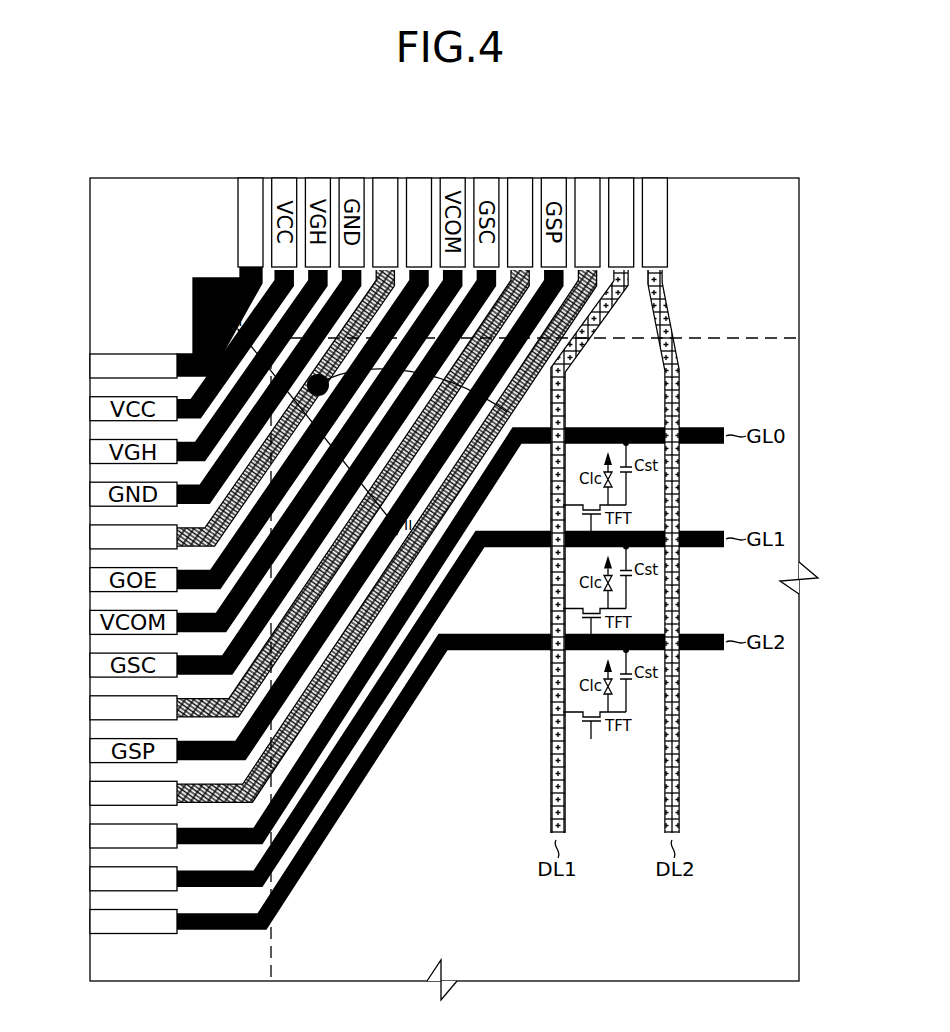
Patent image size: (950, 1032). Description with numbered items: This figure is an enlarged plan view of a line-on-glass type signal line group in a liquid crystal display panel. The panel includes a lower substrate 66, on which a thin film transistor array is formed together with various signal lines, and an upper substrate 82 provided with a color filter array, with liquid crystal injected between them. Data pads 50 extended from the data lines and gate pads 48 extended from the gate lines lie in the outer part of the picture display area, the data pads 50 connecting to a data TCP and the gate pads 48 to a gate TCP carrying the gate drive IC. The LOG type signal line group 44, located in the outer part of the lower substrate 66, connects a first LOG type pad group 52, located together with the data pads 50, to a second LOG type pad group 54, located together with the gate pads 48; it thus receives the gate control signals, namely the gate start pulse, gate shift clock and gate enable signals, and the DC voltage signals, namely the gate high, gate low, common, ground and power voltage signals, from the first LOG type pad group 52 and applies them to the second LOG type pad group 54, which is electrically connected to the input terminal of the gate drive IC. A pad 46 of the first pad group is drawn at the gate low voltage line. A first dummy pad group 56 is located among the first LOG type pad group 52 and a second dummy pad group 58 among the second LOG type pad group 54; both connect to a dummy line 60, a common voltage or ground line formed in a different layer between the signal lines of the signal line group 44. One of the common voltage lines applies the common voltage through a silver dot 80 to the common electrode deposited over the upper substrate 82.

The LOG type signal line group 44 is at (203, 262).
The input pad 46 is at (252, 178).
The gate pads 48 is at (78, 898).
The data pads 50 is at (643, 164).
The first LOG type pad group 52 is at (428, 164).
The second LOG type pad group 54 is at (117, 338).
The first dummy pad group 56 is at (386, 178).
The second dummy pad group 58 is at (90, 538).
The dummy line 60 is at (460, 477).
The lower substrate 66 is at (752, 178).
The silver dot 80 is at (424, 395).
The upper substrate 82 is at (745, 338).